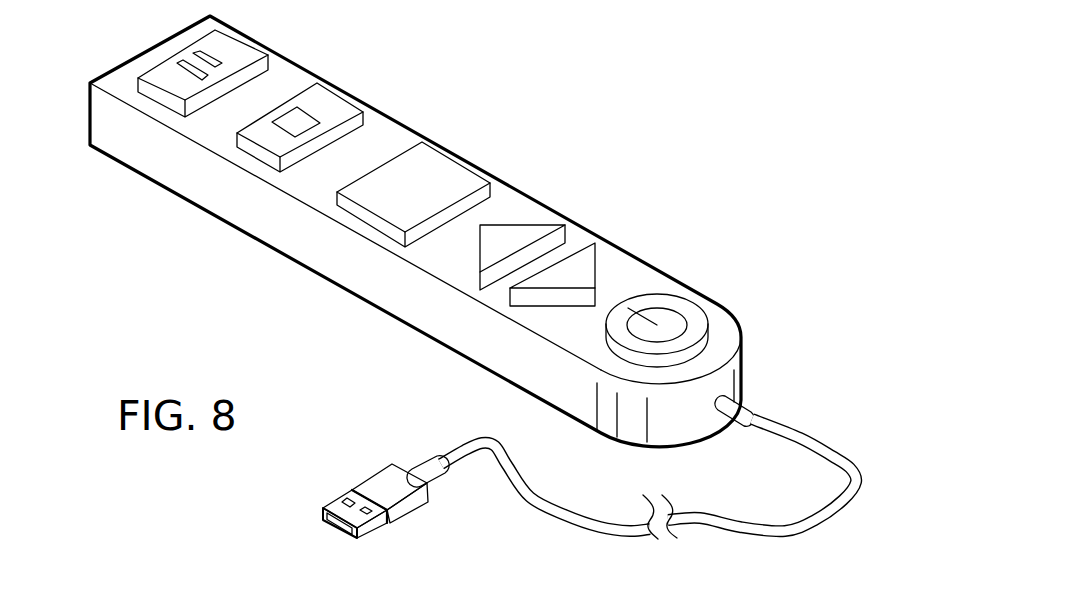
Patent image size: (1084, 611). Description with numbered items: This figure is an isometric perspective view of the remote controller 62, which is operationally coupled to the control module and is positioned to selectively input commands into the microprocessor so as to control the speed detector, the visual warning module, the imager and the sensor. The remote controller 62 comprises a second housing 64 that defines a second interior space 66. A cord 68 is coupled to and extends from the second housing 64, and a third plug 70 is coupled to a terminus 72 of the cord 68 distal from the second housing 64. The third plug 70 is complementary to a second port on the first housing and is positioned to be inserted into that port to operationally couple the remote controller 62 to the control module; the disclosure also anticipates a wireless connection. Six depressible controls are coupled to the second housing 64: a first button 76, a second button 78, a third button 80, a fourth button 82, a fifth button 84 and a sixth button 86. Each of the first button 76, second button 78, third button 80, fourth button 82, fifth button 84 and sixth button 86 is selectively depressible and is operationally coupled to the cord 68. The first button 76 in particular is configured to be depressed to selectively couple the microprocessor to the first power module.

The remote controller 62 is at (439, 231).
The second housing 64 is at (415, 231).
The second interior space 66 is at (517, 217).
The cord 68 is at (830, 458).
The third plug 70 is at (410, 503).
The terminus 72 is at (416, 475).
The first button 76 is at (607, 343).
The second button 78 is at (508, 290).
The third button 80 is at (478, 255).
The fourth button 82 is at (368, 217).
The fifth button 84 is at (260, 153).
The sixth button 86 is at (170, 100).